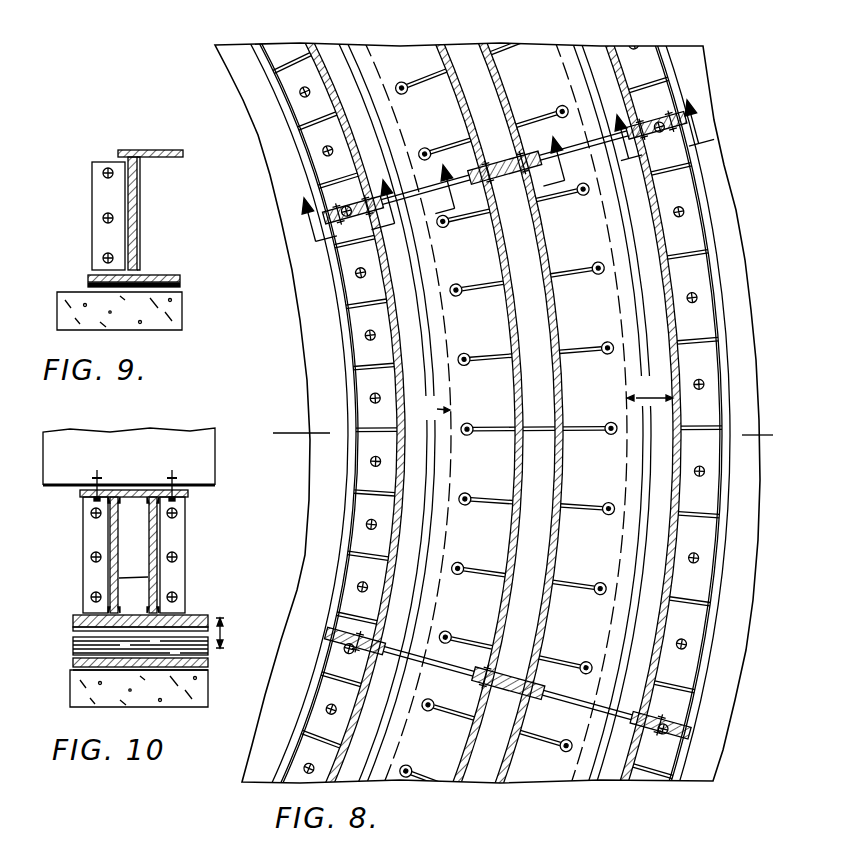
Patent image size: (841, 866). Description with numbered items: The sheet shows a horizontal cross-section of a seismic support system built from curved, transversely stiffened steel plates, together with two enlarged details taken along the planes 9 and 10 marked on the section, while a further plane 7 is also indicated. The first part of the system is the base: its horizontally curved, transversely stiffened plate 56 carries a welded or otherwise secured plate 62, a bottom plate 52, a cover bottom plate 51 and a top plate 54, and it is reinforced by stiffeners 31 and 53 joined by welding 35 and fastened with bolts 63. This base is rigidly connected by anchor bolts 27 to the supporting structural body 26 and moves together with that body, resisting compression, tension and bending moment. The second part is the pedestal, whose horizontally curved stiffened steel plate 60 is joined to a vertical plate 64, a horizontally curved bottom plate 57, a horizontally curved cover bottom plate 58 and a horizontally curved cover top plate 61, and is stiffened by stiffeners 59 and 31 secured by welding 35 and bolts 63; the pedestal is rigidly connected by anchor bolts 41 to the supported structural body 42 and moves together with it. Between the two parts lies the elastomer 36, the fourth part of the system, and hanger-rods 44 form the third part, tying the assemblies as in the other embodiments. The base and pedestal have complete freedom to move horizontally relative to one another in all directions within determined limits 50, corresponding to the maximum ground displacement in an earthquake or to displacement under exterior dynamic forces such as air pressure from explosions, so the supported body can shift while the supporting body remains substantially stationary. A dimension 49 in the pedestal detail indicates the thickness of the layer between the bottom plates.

In FIG. 8, the section line 7- 7 is at (519, 437).
In FIG. 8, the section plane 9— 9 is at (506, 185).
In FIG. 8, the section plane 10— 10 is at (511, 180).
In FIG. 8, the supporting structural body 26 is at (308, 363).
In FIG. 9, the supporting structural body 26 is at (147, 311).
In FIG. 10, the supporting structural body 26 is at (184, 685).
In FIG. 8, the anchor bolts 27 is at (382, 404).
In FIG. 8, the stiffeners 31 is at (484, 287).
In FIG. 8, the welding 35 is at (386, 366).
In FIG. 8, the elastomer 36 is at (438, 475).
In FIG. 10, the elastomer 36 is at (140, 645).
In FIG. 10, the anchor bolts 41 is at (101, 478).
In FIG. 10, the supported structural body 42 is at (176, 478).
In FIG. 8, the hanger-rods 44 is at (470, 366).
In FIG. 10, the gap 49 is at (224, 636).
In FIG. 8, the horizontal movement limits 50 is at (543, 398).
In FIG. 8, the cover bottom plate 51 is at (347, 478).
In FIG. 9, the cover bottom plate 51 is at (181, 286).
In FIG. 10, the cover bottom plate 51 is at (208, 662).
In FIG. 8, the bottom plate 52 is at (355, 501).
In FIG. 9, the bottom plate 52 is at (181, 278).
In FIG. 8, the stiffeners 53 is at (376, 557).
In FIG. 9, the top plate 54 is at (150, 158).
In FIG. 8, the horizontally curved transversely stiffened plate 56 is at (398, 475).
In FIG. 9, the horizontally curved transversely stiffened plate 56 is at (141, 216).
In FIG. 8, the horizontally curved bottom plate 57 is at (438, 551).
In FIG. 10, the horizontally curved bottom plate 57 is at (73, 617).
In FIG. 8, the horizontally curved cover bottom plate 58 is at (452, 529).
In FIG. 10, the horizontally curved cover bottom plate 58 is at (73, 630).
In FIG. 8, the stiffeners 59 is at (540, 376).
In FIG. 8, the horizontally curved stiffened steel plate 60 is at (513, 309).
In FIG. 10, the horizontally curved stiffened steel plate 60 is at (118, 553).
In FIG. 10, the horizontally curved cover top plate 61 is at (190, 494).
In FIG. 8, the plate 62 is at (374, 229).
In FIG. 9, the plate 62 is at (125, 241).
In FIG. 8, the bolts 63 is at (352, 200).
In FIG. 9, the bolts 63 is at (112, 180).
In FIG. 10, the bolts 63 is at (99, 552).
In FIG. 8, the vertical plate 64 is at (521, 172).
In FIG. 10, the vertical plate 64 is at (182, 576).